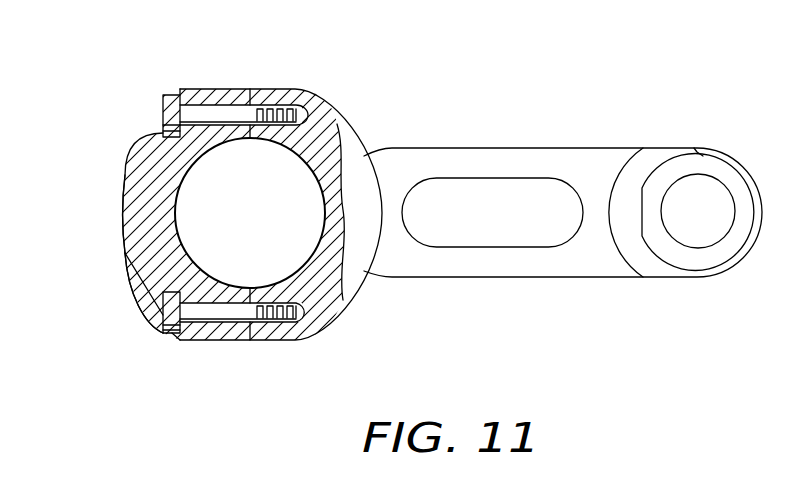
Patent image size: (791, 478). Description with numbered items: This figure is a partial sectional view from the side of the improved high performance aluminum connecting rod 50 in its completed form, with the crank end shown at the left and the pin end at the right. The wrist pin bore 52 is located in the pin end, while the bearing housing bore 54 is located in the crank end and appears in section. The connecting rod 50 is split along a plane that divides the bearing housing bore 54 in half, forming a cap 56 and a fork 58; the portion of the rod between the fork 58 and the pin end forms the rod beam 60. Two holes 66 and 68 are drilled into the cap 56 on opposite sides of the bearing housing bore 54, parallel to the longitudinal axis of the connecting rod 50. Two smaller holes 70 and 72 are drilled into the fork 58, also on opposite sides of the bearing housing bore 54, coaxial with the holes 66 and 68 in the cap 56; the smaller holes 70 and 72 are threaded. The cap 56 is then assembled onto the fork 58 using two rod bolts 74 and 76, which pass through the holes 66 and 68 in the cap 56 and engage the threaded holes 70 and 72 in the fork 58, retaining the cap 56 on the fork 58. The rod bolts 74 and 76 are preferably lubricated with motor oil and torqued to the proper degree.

The improved high performance aluminum connecting rod 50 is at (138, 330).
The wrist pin bore 52 is at (722, 240).
The bearing housing bore 54 is at (305, 176).
The cap 56 is at (138, 268).
The fork 58 is at (302, 168).
The rod beam 60 is at (520, 160).
The hole 66 is at (224, 104).
The hole 68 is at (239, 322).
The smaller hole 70 is at (300, 104).
The smaller hole 72 is at (278, 322).
The rod bolt 74 is at (162, 108).
The rod bolt 76 is at (163, 308).